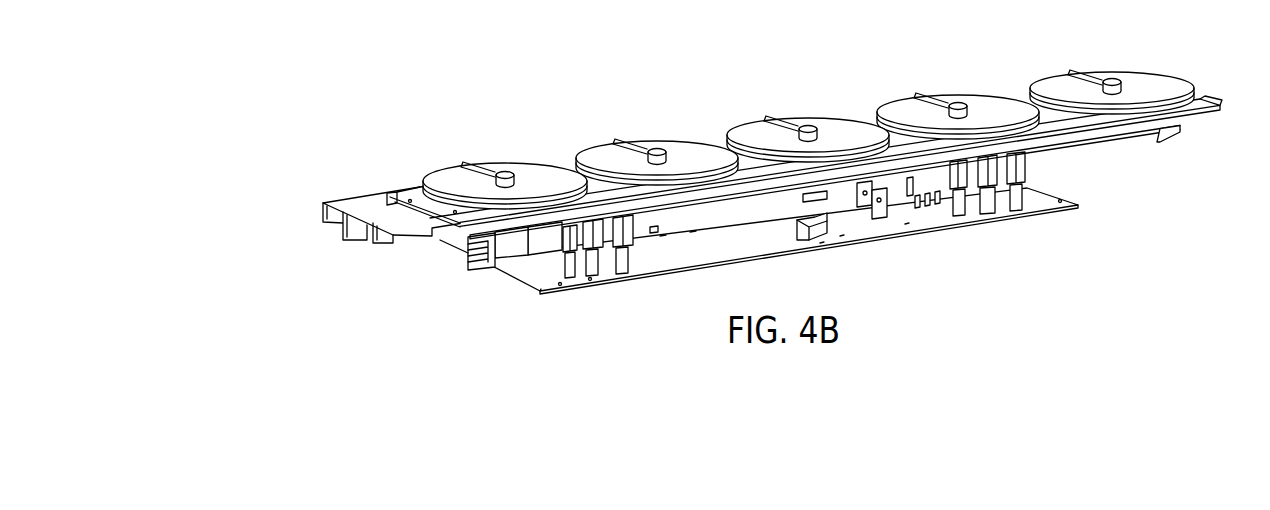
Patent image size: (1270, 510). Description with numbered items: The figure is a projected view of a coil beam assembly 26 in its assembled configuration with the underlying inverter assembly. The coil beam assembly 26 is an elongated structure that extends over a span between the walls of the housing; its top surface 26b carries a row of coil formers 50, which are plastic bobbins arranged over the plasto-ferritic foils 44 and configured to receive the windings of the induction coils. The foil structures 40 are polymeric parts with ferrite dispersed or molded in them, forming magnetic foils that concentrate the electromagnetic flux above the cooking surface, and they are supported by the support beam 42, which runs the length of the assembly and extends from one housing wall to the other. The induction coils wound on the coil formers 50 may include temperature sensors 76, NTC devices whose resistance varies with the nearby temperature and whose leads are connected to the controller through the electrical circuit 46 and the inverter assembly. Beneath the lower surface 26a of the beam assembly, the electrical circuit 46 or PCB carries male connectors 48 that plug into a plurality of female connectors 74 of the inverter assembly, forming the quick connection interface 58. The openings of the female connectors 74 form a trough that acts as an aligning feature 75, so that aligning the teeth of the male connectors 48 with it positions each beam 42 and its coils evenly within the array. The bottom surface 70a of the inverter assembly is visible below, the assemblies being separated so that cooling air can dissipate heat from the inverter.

The coil beam assembly 26 is at (297, 237).
The lower surface of the beam assembly 26a is at (407, 263).
The top surface of the coil beam assembly 26b is at (657, 87).
The foil structure 40 is at (391, 196).
The plasto-ferritic foil 44 is at (772, 166).
The support beam 42 is at (372, 220).
The electrical circuit 46 is at (1057, 152).
The male connector 48 is at (630, 260).
The female connector 74 is at (794, 215).
The coil former 50 is at (727, 140).
The connection interface 58 is at (563, 261).
The bottom surface of the inverter assembly 70a is at (870, 252).
The aligning feature 75 is at (540, 281).
The temperature sensor 76 is at (497, 175).